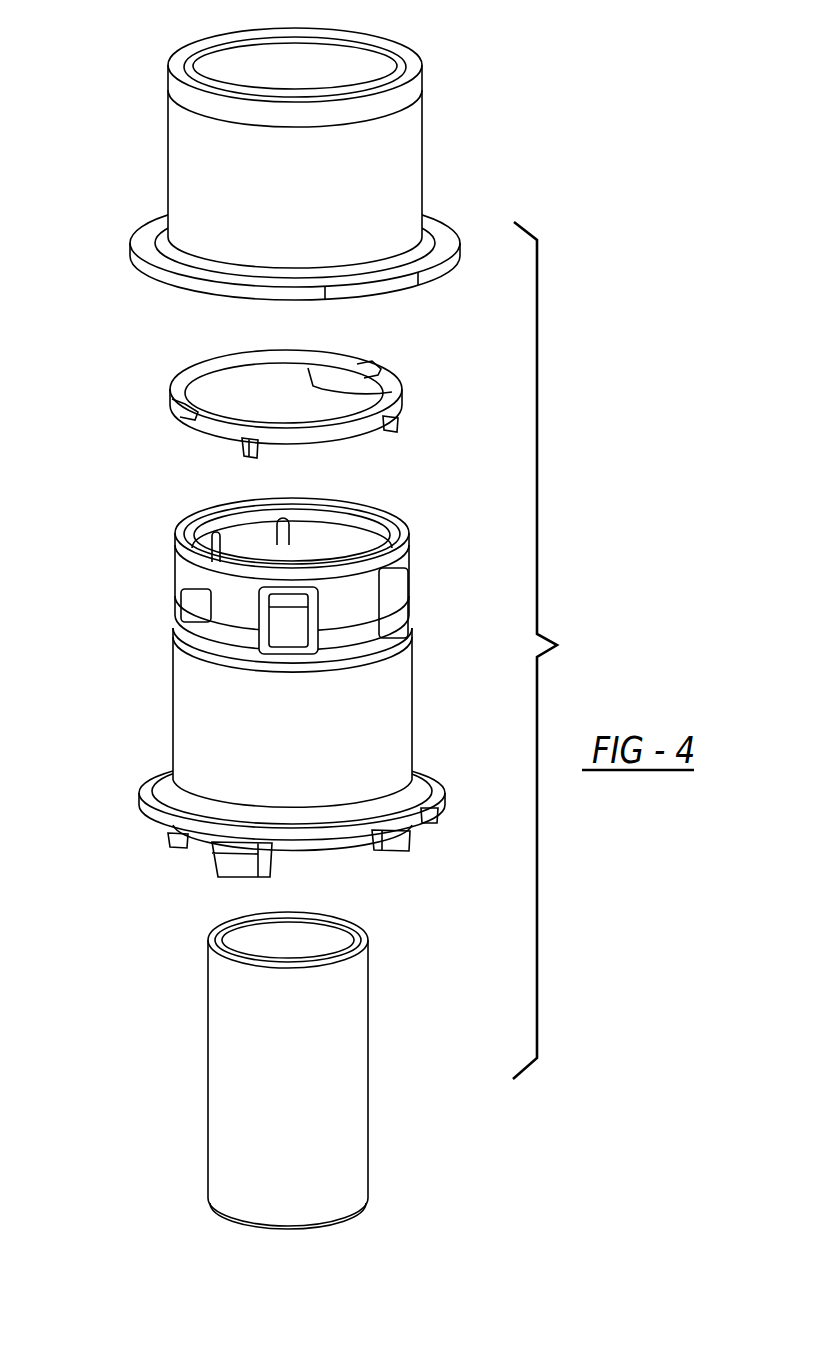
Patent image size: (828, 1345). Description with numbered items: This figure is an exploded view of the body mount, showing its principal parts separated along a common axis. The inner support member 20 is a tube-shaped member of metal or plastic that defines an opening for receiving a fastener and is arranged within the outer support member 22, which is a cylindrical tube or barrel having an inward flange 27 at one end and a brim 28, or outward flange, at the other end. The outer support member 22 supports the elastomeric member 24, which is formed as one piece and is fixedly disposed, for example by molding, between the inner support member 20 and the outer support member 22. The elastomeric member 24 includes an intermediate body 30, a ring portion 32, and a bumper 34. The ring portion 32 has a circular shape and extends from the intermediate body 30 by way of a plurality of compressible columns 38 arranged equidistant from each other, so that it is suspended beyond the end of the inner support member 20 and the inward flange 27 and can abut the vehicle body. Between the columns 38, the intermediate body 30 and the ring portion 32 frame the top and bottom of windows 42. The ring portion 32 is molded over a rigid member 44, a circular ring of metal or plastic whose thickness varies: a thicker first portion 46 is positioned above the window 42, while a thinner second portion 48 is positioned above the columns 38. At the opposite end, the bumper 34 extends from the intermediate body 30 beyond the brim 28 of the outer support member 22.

The inner support member 20 is at (208, 1022).
The outer support member 22 is at (145, 46).
The elastomeric member 24 is at (135, 513).
The inward flange 27 is at (355, 46).
The brim 28 is at (153, 268).
The intermediate body 30 is at (172, 700).
The ring portion 32 is at (165, 555).
The bumper 34 is at (128, 810).
The columns 38 is at (366, 610).
The windows 42 is at (236, 628).
The rigid member 44 is at (158, 352).
The first portion 46 is at (388, 362).
The second portion 48 is at (218, 372).